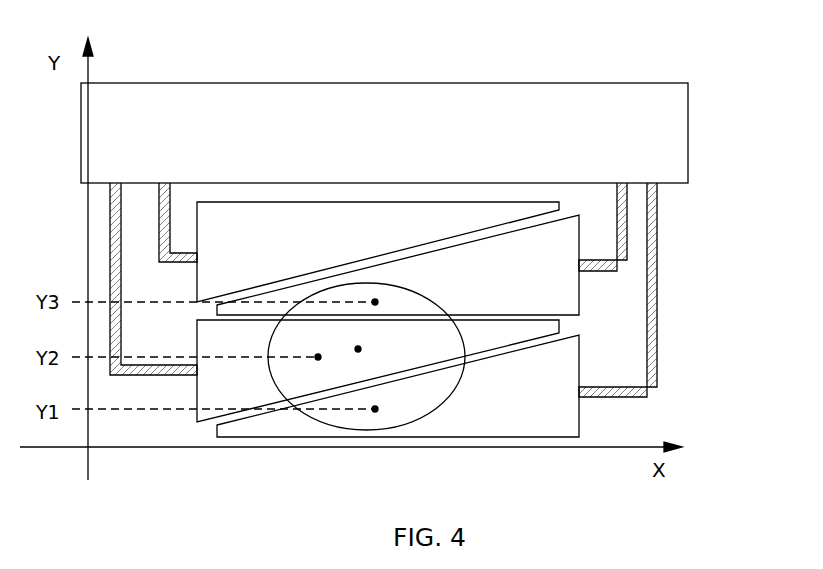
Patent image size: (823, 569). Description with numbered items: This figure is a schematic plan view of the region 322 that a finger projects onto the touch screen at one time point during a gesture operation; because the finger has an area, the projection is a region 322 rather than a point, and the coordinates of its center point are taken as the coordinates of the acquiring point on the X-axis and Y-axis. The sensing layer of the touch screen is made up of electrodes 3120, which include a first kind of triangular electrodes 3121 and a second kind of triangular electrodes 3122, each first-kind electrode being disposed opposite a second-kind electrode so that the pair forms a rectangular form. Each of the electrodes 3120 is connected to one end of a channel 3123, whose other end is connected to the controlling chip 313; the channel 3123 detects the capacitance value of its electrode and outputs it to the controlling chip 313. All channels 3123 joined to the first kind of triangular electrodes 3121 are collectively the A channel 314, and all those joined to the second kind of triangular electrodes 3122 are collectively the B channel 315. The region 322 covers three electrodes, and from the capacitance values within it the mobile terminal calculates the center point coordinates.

The controlling chip 313 is at (733, 126).
The A channel 314 is at (170, 158).
The B channel 315 is at (648, 158).
The region 322 is at (373, 283).
The electrodes 3120 is at (485, 378).
The first kind of triangular electrodes 3121 is at (548, 331).
The second kind of triangular electrodes 3122 is at (579, 425).
The channel 3123 is at (703, 281).